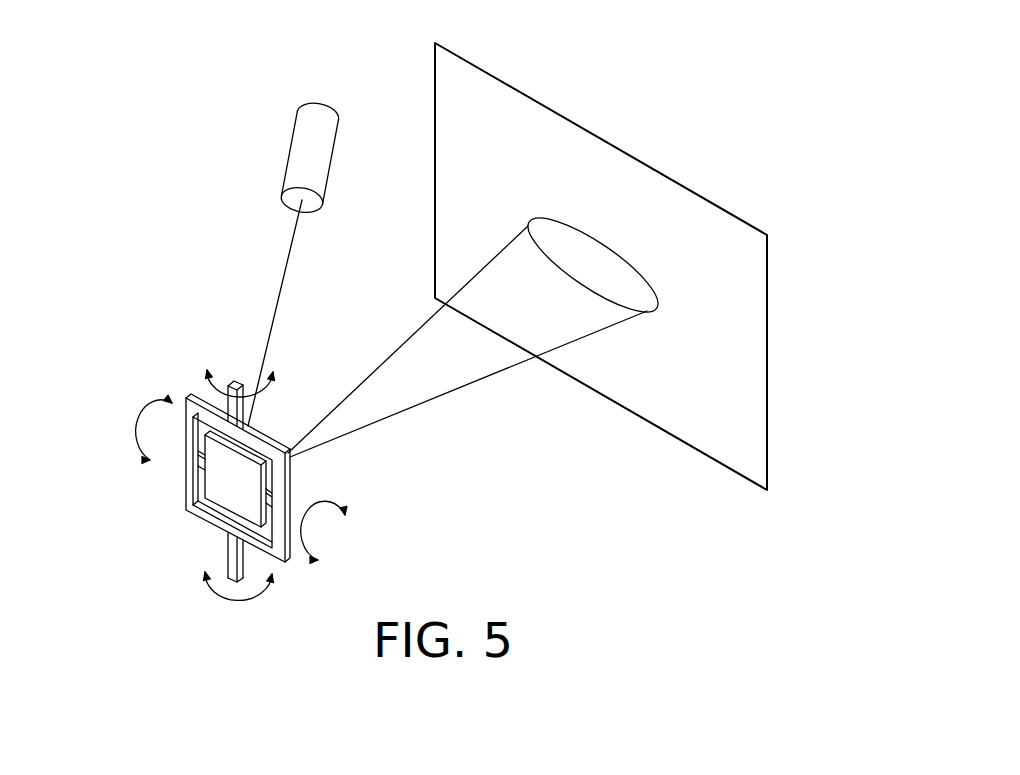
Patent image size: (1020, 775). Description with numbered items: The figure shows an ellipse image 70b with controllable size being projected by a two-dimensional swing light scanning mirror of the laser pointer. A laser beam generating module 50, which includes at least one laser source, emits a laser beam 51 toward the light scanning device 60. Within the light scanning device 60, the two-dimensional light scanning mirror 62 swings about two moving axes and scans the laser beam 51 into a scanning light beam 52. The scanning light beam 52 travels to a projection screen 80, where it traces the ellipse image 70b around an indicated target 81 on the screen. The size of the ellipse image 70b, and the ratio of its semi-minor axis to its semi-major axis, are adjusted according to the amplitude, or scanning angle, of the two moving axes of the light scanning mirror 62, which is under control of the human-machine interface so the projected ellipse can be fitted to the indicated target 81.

The laser beam generating module 50 is at (302, 152).
The laser beam 51 is at (282, 283).
The scanning light beam 52 is at (427, 397).
The light scanning device 60 is at (194, 487).
The 2-dimensional light scanning mirror 62 is at (192, 487).
The projection screen 80 is at (552, 110).
The indicated target 81 is at (612, 268).
The ellipse image 70b is at (653, 278).